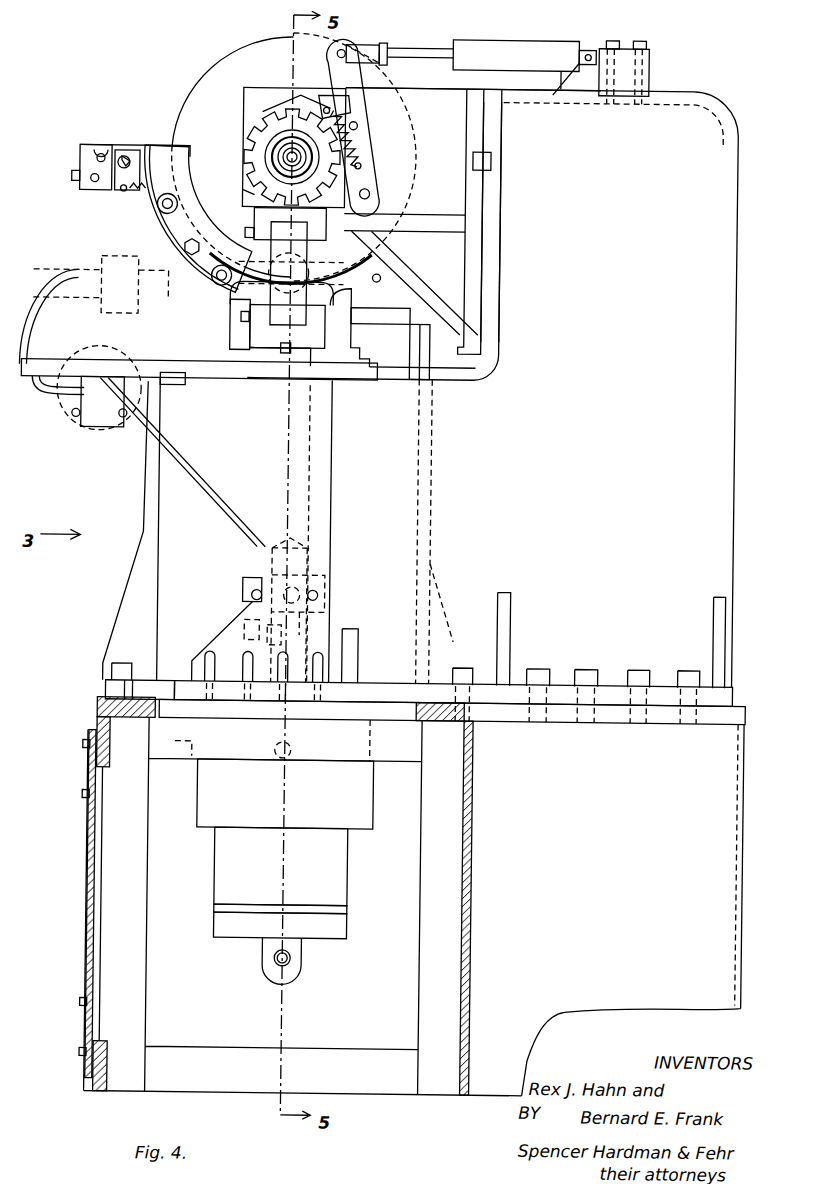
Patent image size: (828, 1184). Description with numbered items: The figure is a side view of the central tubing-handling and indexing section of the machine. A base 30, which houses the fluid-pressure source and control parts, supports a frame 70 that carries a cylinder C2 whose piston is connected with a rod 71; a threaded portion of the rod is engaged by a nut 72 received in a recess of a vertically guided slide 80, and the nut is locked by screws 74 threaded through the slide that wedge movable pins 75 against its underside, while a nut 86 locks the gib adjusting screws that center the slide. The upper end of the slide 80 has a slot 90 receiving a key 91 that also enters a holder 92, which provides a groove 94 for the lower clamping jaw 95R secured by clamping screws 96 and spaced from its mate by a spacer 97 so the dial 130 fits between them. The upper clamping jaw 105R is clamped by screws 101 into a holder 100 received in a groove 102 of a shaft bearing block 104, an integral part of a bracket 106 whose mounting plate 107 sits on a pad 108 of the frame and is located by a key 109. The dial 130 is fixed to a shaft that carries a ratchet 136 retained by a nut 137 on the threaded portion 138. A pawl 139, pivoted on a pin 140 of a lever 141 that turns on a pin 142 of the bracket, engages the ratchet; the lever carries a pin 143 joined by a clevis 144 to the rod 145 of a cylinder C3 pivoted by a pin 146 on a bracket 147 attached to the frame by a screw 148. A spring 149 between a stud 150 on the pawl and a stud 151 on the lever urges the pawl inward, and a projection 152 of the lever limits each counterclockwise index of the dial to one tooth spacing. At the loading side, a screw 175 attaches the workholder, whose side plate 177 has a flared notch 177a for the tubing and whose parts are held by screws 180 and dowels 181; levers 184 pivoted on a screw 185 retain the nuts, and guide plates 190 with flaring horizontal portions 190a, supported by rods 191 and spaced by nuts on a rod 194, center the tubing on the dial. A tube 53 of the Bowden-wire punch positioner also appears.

The base 30 is at (104, 707).
The tube 53 is at (38, 305).
The frame 70 is at (739, 303).
The rod 71 is at (267, 692).
The nut 72 is at (248, 584).
The screws 74 is at (250, 630).
The pins 75 is at (327, 602).
The slide 80 is at (322, 482).
The nut 86 is at (264, 358).
The slot 90 is at (285, 360).
The key 91 is at (292, 338).
The holder 92 is at (262, 330).
The groove 94 is at (262, 342).
The clamping jaw 95R is at (322, 322).
The clamping screws 96 is at (232, 322).
The spacer 97 is at (243, 314).
The holder 100 is at (255, 210).
The screws 101 is at (246, 232).
The groove 102 is at (243, 190).
The shaft bearing block 104 is at (243, 100).
The upper clamping jaw 105R is at (305, 262).
The bracket 106 is at (420, 107).
The mounting plate 107 is at (479, 258).
The pad 108 is at (491, 205).
The key 109 is at (491, 160).
The dial 130 is at (185, 100).
The ratchet 136 is at (265, 150).
The nut 137 is at (272, 155).
The threaded portion 138 is at (278, 160).
The pawl 139 is at (280, 105).
The pin 140 is at (357, 125).
The lever 141 is at (352, 150).
The pin 142 is at (370, 196).
The pin 143 is at (342, 50).
The clevis 144 is at (384, 43).
The rod 145 is at (418, 47).
The pin 146 is at (588, 47).
The bracket 147 is at (650, 75).
The screw 148 is at (650, 31).
The spring 149 is at (388, 140).
The stud 150 is at (332, 100).
The stud 151 is at (361, 167).
The projection 152 is at (322, 128).
The screw 175 is at (72, 178).
The side plate 177 is at (82, 190).
The flared notch 177a is at (104, 152).
The screws 180 is at (95, 185).
The dowels 181 is at (82, 150).
The levers 184 is at (120, 195).
The screw 185 is at (128, 168).
The plates 190 is at (165, 230).
The horizontal portions 190a is at (175, 135).
The rods 191 is at (165, 208).
The rod 194 is at (186, 252).
The cylinder C2 is at (358, 882).
The cylinder C3 is at (482, 48).